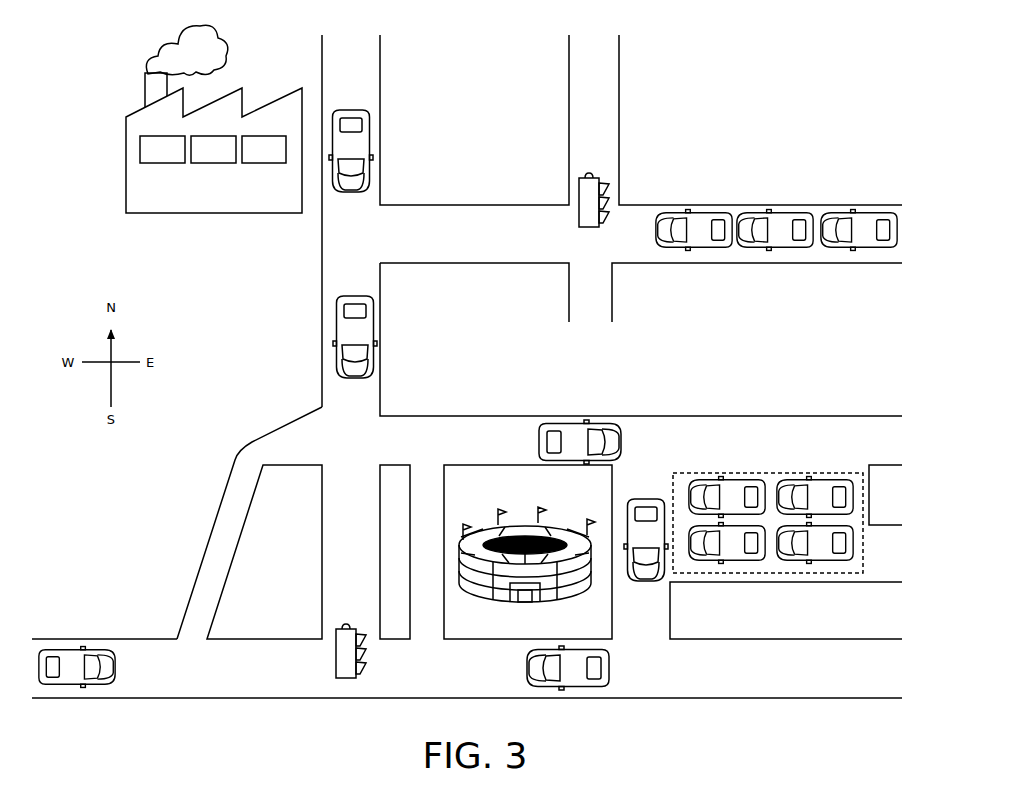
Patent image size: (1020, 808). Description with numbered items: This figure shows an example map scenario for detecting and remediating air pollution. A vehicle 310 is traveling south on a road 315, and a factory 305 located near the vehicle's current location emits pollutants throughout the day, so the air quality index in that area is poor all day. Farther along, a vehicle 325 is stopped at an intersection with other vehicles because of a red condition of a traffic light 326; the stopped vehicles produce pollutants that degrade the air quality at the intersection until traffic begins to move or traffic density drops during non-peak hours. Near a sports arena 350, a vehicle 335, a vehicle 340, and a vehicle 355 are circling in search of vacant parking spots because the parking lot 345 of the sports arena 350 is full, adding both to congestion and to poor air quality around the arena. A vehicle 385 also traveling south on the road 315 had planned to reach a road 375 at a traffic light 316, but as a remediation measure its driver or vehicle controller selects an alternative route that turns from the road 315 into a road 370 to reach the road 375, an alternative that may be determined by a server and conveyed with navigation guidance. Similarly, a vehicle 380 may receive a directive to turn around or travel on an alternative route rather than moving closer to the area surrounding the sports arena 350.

The factory 305 is at (212, 220).
The vehicle 310 is at (350, 104).
The road 315 is at (381, 113).
The traffic light 316 is at (329, 660).
The vehicle 325 is at (698, 206).
The traffic light 326 is at (572, 222).
The vehicle 335 is at (532, 440).
The vehicle 340 is at (653, 493).
The parking lot 345 is at (763, 472).
The sports arena 350 is at (567, 518).
The vehicle 355 is at (616, 674).
The road 370 is at (208, 541).
The road 375 is at (310, 699).
The vehicle 380 is at (121, 677).
The vehicle 385 is at (352, 291).